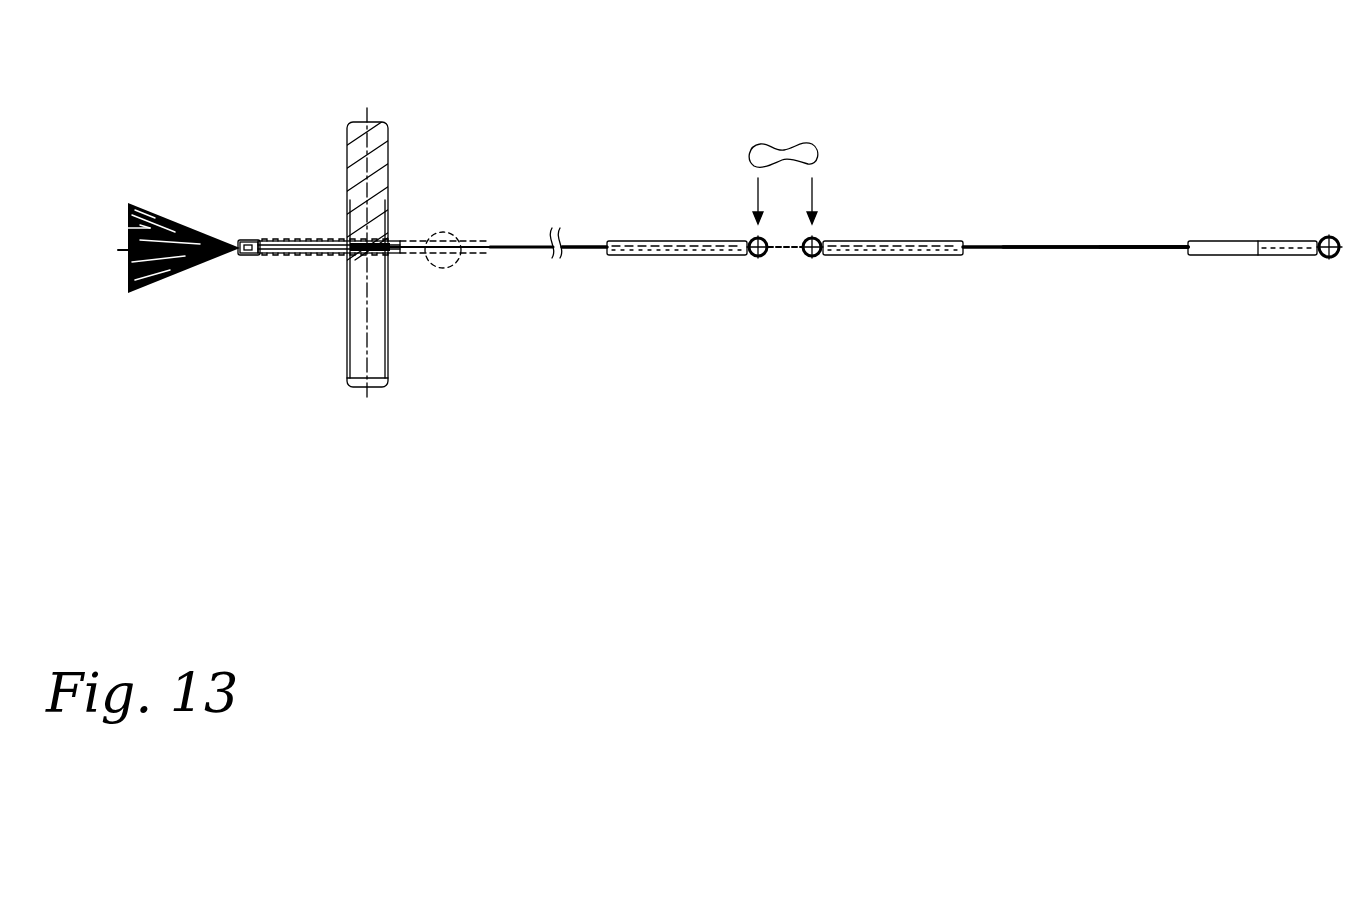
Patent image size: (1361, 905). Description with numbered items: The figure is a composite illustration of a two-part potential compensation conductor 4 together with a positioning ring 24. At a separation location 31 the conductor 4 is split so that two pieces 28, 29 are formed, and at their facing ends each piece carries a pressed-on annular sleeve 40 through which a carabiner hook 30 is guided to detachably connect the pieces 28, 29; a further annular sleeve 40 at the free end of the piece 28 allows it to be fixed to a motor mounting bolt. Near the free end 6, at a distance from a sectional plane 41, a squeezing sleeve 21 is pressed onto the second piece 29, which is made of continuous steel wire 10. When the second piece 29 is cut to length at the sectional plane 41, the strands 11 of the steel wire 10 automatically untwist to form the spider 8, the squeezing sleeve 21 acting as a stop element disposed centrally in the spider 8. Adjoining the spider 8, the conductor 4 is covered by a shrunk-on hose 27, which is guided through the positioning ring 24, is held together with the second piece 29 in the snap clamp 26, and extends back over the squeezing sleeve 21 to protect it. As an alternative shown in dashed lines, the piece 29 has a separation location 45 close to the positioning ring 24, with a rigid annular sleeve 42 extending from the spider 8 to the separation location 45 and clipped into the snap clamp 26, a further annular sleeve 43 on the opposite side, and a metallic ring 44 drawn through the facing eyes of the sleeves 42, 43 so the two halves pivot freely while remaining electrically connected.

The potential compensation conductor 4 is at (1106, 149).
The free end 6 is at (250, 210).
The spider 8 is at (120, 299).
The steel wire 10 is at (1003, 245).
The strands 11 is at (152, 213).
The squeezing sleeve 21 is at (248, 257).
The positioning ring 24 is at (381, 137).
The snap clamp 26 is at (347, 243).
The shrunk-on hose 27 is at (295, 255).
The piece 28 is at (1088, 277).
The second piece 29 is at (539, 215).
The carabiner hook 30 is at (790, 142).
The separation location 31 is at (785, 297).
The annular sleeve 40 is at (682, 252).
The sectional plane 41 is at (104, 228).
The rigid annular sleeve 42 is at (397, 257).
The further annular sleeve 43 is at (477, 258).
The ring 44 is at (443, 233).
The separation location 45 is at (459, 294).